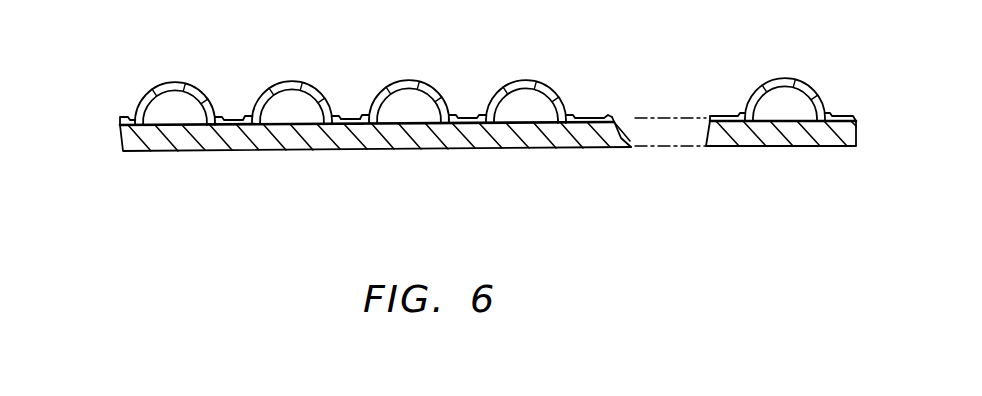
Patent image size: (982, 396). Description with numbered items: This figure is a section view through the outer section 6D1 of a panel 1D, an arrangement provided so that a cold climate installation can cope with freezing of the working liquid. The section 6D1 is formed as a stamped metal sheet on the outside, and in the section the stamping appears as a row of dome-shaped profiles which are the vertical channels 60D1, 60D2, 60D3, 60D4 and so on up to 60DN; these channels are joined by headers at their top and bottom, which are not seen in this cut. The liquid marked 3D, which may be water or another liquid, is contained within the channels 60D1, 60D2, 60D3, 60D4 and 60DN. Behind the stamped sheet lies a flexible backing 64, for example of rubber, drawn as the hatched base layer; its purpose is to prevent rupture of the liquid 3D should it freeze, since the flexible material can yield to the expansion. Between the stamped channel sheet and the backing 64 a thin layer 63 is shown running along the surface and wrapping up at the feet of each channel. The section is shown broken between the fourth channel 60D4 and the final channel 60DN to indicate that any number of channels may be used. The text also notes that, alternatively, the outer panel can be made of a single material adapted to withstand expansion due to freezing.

The surface layer 63 is at (116, 109).
The flexible backing 64 is at (185, 143).
The vertical channel 60D1 is at (165, 92).
The vertical channel 60D2 is at (283, 90).
The vertical channel 60D3 is at (392, 114).
The vertical channel 60D4 is at (553, 114).
The vertical channel 60DN is at (775, 90).
The panel 1D is at (343, 110).
The liquid 3D is at (401, 92).
The outer section 6D1 is at (509, 88).